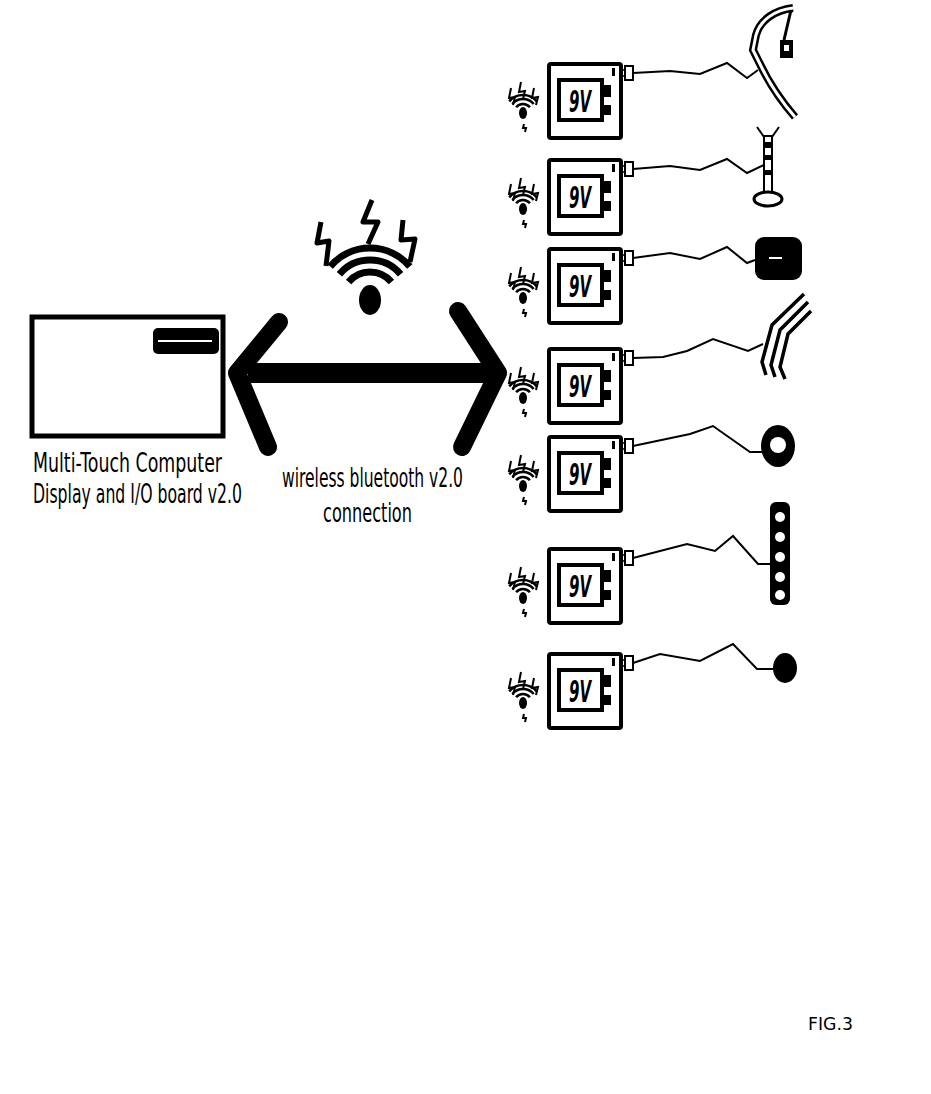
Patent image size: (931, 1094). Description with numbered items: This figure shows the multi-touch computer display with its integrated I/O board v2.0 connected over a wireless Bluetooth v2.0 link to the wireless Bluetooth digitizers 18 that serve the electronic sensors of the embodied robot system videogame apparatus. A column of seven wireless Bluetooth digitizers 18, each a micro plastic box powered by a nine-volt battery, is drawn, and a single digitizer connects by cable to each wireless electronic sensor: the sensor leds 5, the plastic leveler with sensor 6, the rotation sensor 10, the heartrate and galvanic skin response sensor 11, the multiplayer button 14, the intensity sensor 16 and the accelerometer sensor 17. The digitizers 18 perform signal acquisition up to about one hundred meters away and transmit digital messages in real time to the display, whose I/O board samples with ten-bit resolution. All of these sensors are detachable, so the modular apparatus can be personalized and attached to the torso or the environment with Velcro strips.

The sensor leds 5 is at (724, 62).
The plastic leveler with sensor 6 is at (721, 166).
The rotation sensor 10 is at (731, 258).
The heartrate and galvanic skin response sensor 11 is at (722, 336).
The multiplayer button 14 is at (725, 446).
The intensity sensor 16 is at (723, 553).
The accelerometer sensor 17 is at (726, 663).
The wireless Bluetooth digitizers 18 is at (599, 431).